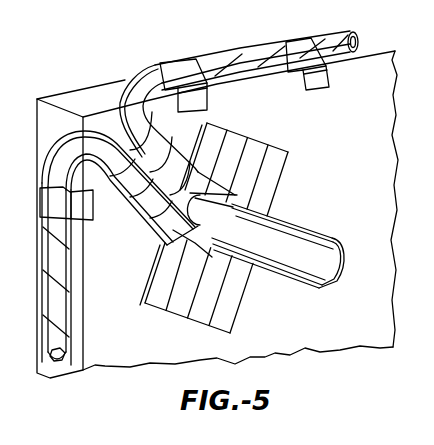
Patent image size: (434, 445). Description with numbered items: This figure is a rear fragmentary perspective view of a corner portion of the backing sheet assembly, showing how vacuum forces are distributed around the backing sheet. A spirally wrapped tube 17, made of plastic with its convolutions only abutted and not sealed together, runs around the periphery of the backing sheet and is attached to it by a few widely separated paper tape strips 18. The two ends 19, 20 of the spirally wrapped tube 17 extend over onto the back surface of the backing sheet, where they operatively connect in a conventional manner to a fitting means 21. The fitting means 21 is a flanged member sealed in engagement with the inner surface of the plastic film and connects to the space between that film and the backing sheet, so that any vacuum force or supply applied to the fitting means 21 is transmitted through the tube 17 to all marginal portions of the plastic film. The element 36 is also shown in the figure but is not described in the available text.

The spirally wrapped tube 17 is at (243, 48).
The paper tape strips 18 is at (307, 79).
The end of tube 19 is at (143, 208).
The end of tube 20 is at (170, 157).
The fitting means 21 is at (302, 240).
The channel plate 36 is at (272, 160).